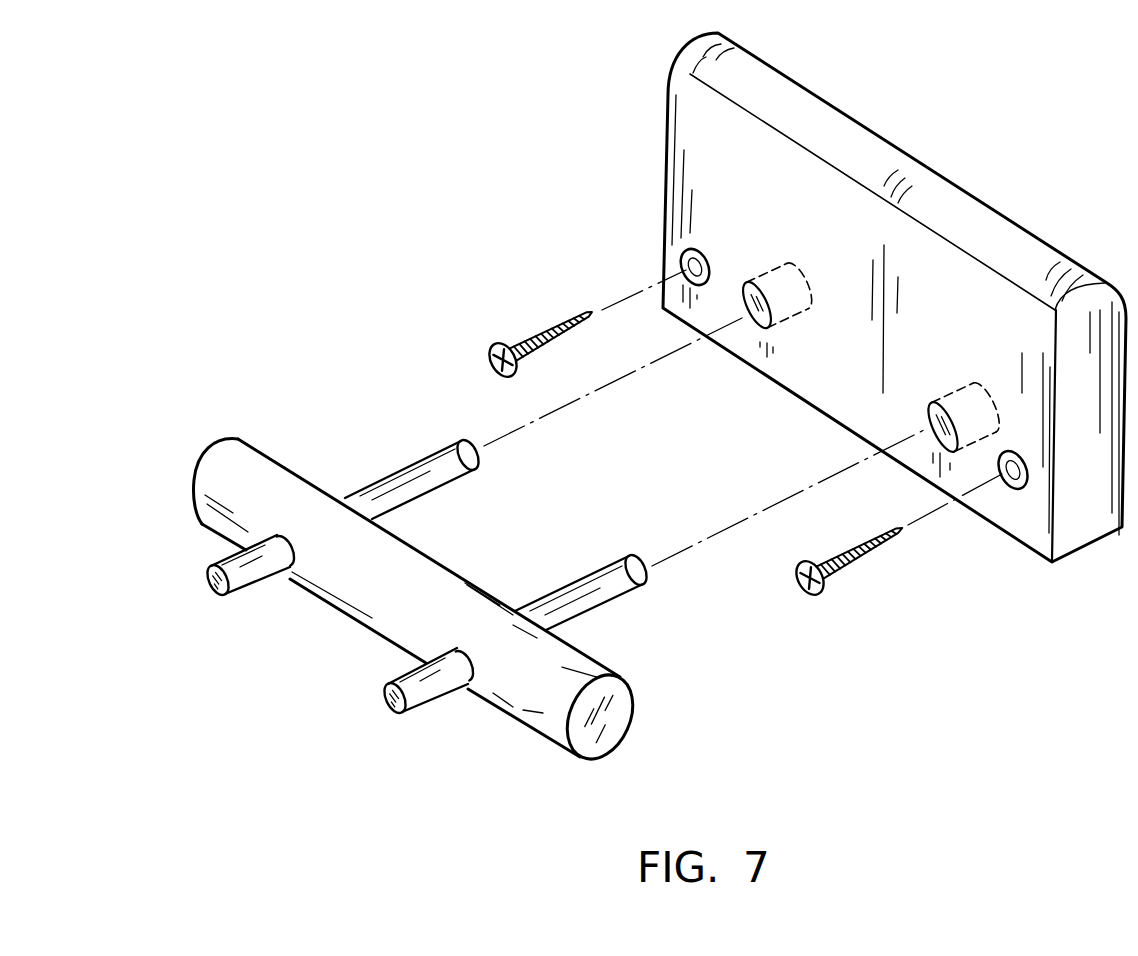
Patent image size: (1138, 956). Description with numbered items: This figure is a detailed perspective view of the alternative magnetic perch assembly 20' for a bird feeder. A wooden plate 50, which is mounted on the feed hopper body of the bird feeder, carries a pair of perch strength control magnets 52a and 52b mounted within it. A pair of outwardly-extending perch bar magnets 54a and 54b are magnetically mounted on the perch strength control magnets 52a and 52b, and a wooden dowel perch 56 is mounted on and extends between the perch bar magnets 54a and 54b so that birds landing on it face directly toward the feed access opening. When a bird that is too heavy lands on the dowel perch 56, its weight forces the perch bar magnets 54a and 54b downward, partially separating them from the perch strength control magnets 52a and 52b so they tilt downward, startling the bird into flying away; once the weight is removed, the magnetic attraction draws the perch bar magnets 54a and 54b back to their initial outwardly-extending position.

The wooden plate 50 is at (957, 218).
The perch strength control magnet 52a is at (753, 318).
The perch strength control magnet 52b is at (927, 416).
The perch bar magnet 54a is at (423, 482).
The perch bar magnet 54b is at (620, 598).
The wooden dowel perch 56 is at (537, 692).
The magnetic perch assembly 20' is at (469, 594).